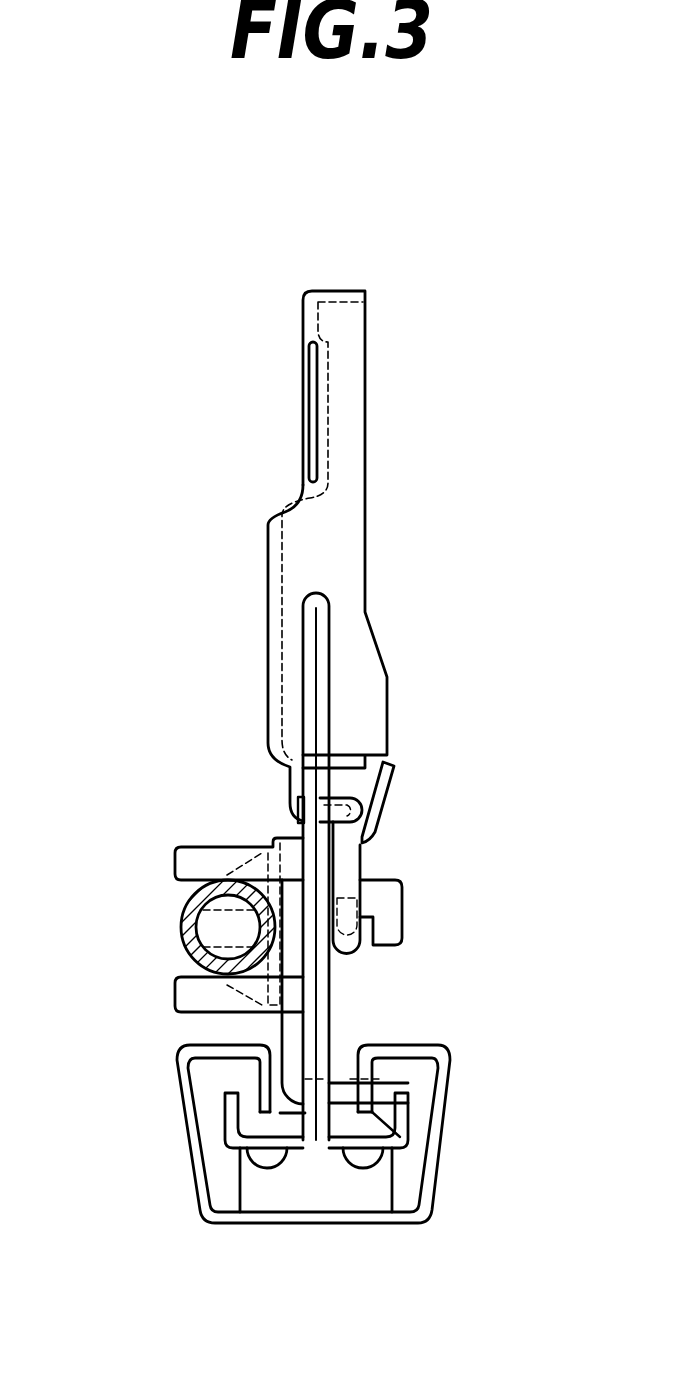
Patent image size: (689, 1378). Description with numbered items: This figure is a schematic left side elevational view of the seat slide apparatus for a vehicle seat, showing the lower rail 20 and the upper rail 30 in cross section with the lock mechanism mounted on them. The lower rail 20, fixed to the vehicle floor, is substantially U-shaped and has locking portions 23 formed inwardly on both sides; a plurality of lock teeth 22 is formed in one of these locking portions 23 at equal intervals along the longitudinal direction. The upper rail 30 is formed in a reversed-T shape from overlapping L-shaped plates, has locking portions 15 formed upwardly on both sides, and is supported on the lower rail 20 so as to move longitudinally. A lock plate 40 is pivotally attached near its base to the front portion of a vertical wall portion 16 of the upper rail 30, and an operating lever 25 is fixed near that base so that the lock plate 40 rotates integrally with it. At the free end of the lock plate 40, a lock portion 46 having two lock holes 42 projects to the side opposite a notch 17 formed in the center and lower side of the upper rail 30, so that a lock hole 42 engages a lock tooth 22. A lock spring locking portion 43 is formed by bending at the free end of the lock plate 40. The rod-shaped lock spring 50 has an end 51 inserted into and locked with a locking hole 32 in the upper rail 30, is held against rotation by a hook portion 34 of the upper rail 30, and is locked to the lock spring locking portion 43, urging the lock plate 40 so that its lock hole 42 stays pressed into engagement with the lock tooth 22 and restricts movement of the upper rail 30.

The locking portions 15 is at (230, 1105).
The vertical wall portion 16 is at (330, 1000).
The notch 17 is at (318, 1090).
The lower rail 20 is at (425, 1218).
The lock tooth 22 is at (372, 1113).
The locking portions 23 is at (228, 1085).
The operating lever 25 is at (183, 915).
The upper rail 30 is at (332, 626).
The locking hole 32 is at (325, 815).
The hook portion 34 is at (380, 807).
The lock plate 40 is at (293, 840).
The lock hole 42 is at (352, 1083).
The lock spring locking portion 43 is at (403, 899).
The lock portion 46 is at (410, 1093).
The lock spring 50 is at (363, 868).
The end 51 is at (292, 797).